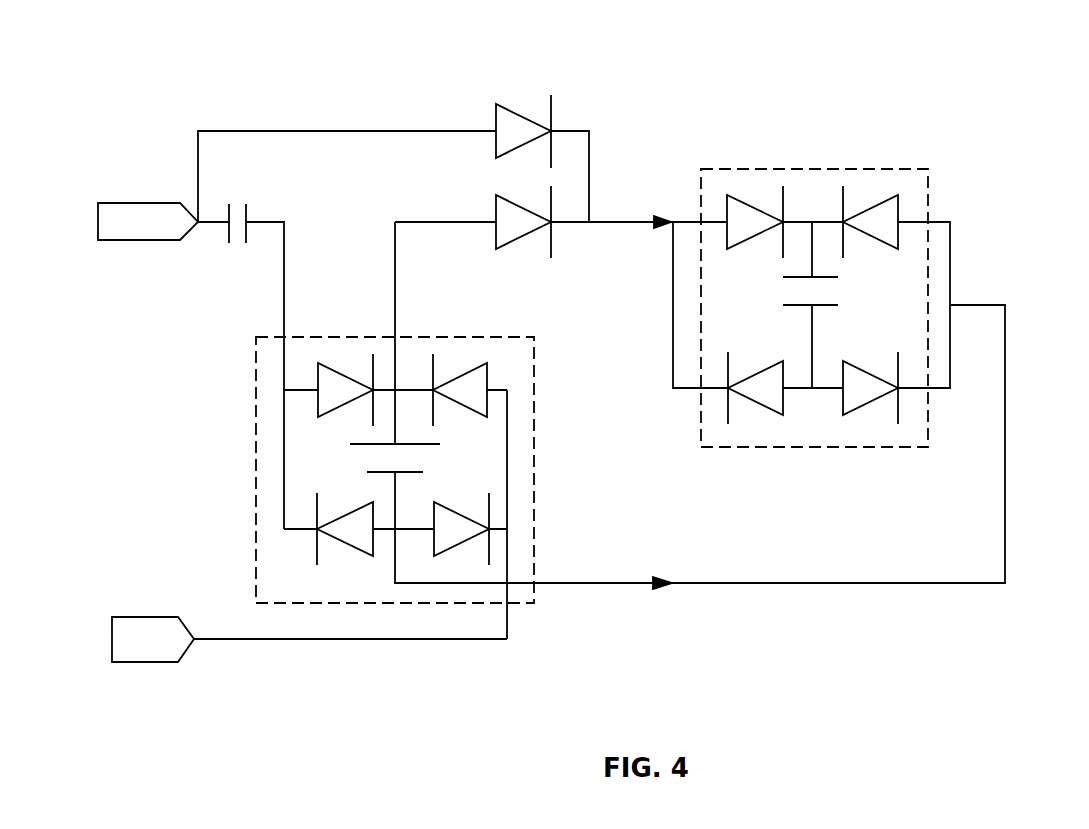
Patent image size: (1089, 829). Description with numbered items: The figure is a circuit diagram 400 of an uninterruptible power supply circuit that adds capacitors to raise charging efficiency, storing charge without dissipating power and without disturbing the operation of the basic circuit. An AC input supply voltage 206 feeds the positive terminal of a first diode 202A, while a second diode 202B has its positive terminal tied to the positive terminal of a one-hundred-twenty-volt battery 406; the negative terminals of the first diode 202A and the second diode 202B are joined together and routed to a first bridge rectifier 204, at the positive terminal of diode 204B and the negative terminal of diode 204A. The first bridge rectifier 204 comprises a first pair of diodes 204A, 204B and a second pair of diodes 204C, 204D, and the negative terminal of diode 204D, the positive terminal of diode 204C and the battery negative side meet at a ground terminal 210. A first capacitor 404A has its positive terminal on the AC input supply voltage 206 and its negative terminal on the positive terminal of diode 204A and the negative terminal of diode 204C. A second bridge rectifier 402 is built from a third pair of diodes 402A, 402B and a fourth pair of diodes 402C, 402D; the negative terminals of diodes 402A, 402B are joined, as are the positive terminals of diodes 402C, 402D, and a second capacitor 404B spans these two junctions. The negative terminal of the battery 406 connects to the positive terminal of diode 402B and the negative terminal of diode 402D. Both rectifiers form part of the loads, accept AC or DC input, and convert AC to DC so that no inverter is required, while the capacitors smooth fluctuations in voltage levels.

The circuit diagram 400 is at (722, 678).
The AC input supply voltage 206 is at (152, 203).
The ground terminal 210 is at (148, 662).
The first capacitor 404A is at (247, 206).
The second capacitor 404B is at (828, 276).
The first diode 202A is at (492, 105).
The second diode 202B is at (532, 232).
The second bridge rectifier 402 is at (256, 476).
The diode 402A is at (318, 366).
The diode 402B is at (488, 367).
The diode 402C is at (353, 550).
The diode 402D is at (440, 557).
The 120V battery 406 is at (423, 472).
The first bridge rectifier 204 is at (928, 192).
The diode 204A is at (725, 197).
The diode 204B is at (872, 200).
The diode 204C is at (770, 410).
The diode 204D is at (868, 405).